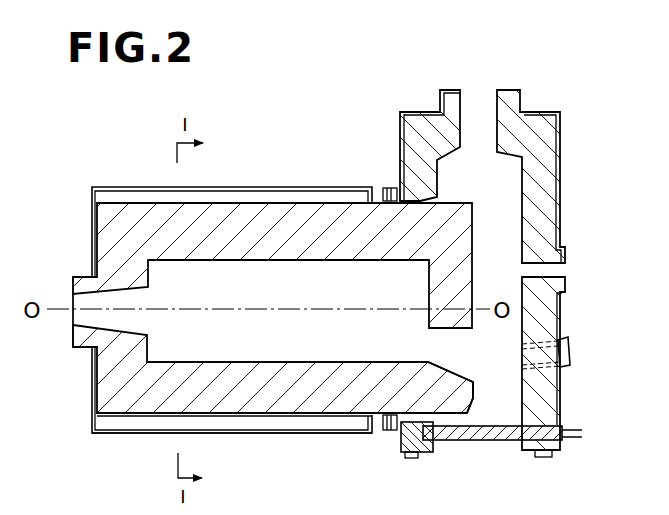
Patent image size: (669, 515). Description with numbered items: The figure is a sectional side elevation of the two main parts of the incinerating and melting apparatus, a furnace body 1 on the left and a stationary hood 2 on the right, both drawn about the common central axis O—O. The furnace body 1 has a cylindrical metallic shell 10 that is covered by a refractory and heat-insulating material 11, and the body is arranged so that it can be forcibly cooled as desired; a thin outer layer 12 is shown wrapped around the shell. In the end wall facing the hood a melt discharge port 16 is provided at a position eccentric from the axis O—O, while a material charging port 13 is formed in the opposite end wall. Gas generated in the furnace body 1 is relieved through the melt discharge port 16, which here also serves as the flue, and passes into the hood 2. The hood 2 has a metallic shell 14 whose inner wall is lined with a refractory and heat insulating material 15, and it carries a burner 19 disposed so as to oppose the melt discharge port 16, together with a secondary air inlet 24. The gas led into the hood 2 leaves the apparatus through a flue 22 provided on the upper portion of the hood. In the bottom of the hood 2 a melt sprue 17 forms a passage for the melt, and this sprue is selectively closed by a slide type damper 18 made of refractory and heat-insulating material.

The furnace body 1 is at (107, 438).
The hood 2 is at (565, 132).
The cylindrical metallic shell 10 is at (375, 198).
The refractory and heat-insulating material 11 is at (352, 262).
The outer sleeve 12 is at (322, 197).
The material charging port 13 is at (83, 302).
The metallic shell 14 is at (560, 167).
The refractory and heat insulating material 15 is at (540, 215).
The melt discharge port 16 is at (430, 345).
The melt sprue 17 is at (498, 413).
The slide type damper 18 is at (487, 440).
The burner 19 is at (567, 343).
The flue 22 is at (487, 95).
The secondary air inlet 24 is at (555, 270).